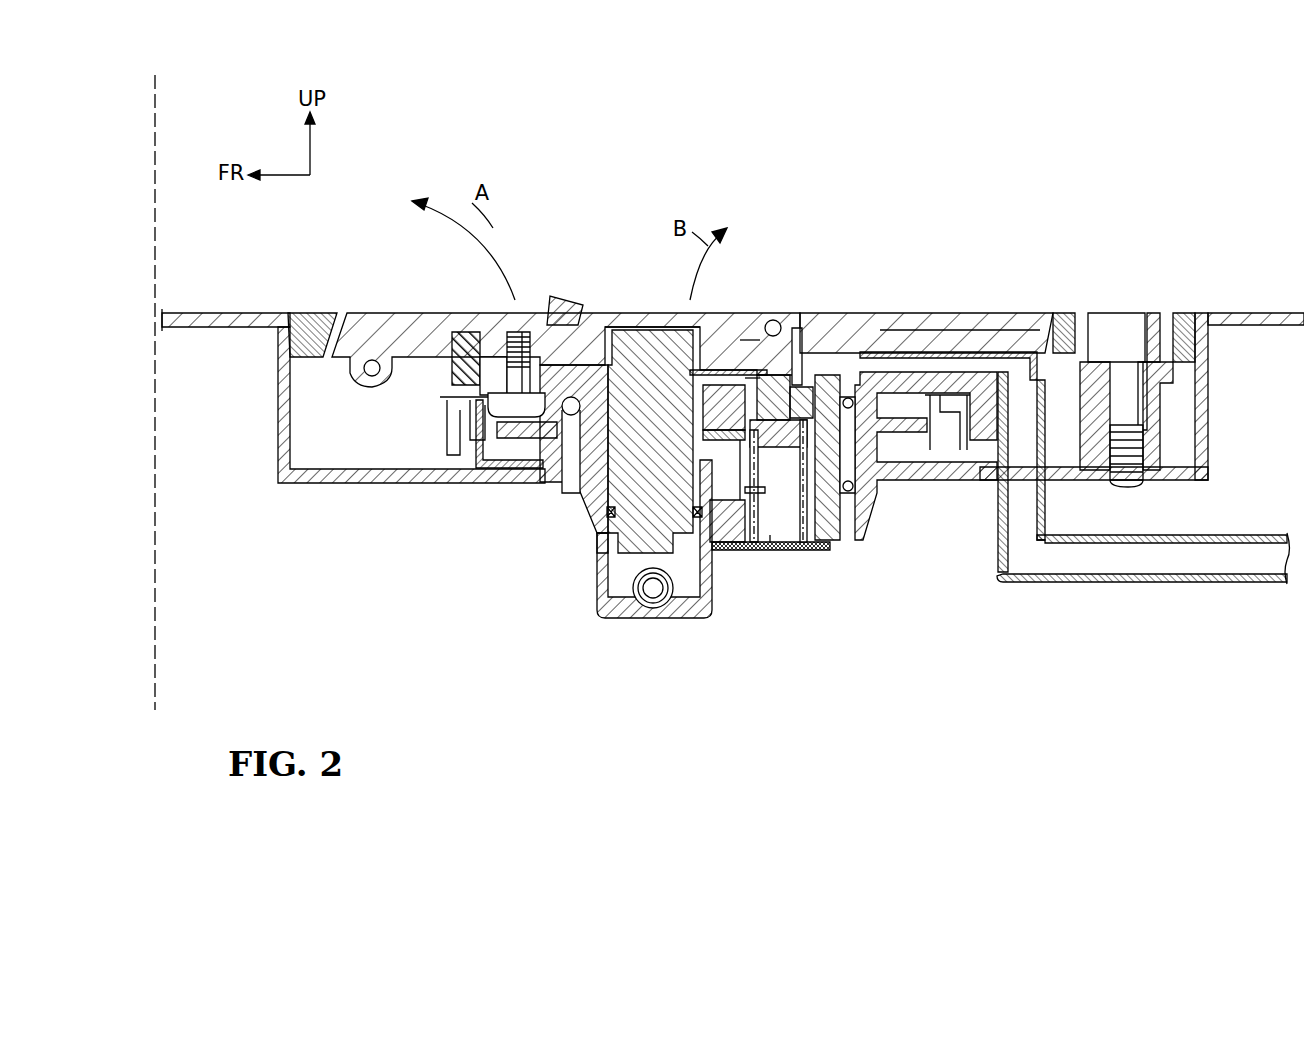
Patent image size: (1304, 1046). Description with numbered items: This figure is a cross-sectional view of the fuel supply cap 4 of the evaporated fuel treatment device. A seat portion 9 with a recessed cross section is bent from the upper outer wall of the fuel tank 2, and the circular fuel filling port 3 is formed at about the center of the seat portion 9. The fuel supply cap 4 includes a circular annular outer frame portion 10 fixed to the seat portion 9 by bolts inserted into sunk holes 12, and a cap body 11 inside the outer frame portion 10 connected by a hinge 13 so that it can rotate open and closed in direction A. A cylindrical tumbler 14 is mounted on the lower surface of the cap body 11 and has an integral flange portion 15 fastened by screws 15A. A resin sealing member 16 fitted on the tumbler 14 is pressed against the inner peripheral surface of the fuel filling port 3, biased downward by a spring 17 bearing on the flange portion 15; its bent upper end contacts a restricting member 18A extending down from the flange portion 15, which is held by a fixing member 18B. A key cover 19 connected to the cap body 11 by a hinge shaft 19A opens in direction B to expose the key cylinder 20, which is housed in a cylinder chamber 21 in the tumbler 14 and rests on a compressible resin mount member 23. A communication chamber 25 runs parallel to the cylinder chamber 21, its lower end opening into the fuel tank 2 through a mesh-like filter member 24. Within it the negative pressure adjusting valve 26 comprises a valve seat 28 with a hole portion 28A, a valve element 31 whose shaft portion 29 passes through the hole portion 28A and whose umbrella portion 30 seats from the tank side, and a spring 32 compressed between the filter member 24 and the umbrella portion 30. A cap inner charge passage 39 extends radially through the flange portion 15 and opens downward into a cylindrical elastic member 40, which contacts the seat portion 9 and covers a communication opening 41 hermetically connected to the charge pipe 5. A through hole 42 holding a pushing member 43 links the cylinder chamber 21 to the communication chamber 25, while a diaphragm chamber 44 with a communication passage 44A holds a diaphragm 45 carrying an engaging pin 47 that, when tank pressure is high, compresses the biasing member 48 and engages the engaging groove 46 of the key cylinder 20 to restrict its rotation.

The fuel tank 2 is at (238, 313).
The fuel filling port 3 is at (533, 496).
The fuel supply cap 4 is at (893, 313).
The charge pipe 5 is at (1165, 584).
The seat portion 9 is at (1055, 480).
The outer frame portion 10 is at (1063, 325).
The cap body 11 is at (907, 330).
The sunk holes 12 is at (1140, 330).
The hinge 13 is at (368, 372).
The tumbler 14 is at (825, 542).
The flange portion 15 is at (548, 330).
The screws 15A is at (573, 377).
The sealing member 16 is at (866, 520).
The spring 17 is at (571, 493).
The restricting member 18A is at (895, 470).
The fixing member 18B is at (953, 450).
The key cover 19 is at (632, 313).
The hinge shaft 19A is at (776, 320).
The key cylinder 20 is at (652, 592).
The cylinder chamber 21 is at (610, 575).
The mount member 23 is at (600, 525).
The filter member 24 is at (777, 551).
The communication chamber 25 is at (803, 551).
The negative pressure adjusting valve 26 is at (797, 374).
The valve seat 28 is at (830, 370).
The hole portion 28A is at (815, 372).
The shaft portion 29 is at (745, 392).
The umbrella portion 30 is at (752, 418).
The valve element 31 is at (652, 403).
The spring 32 is at (757, 551).
The cap inner charge passage 39 is at (950, 352).
The cylindrical elastic member 40 is at (1045, 440).
The communication opening 41 is at (1000, 490).
The through hole 42 is at (712, 327).
The pushing member 43 is at (750, 327).
The diaphragm chamber 44 is at (758, 460).
The communication passage 44A is at (698, 520).
The diaphragm 45 is at (758, 489).
The engaging groove 46 is at (722, 474).
The engaging pin 47 is at (710, 475).
The biasing member 48 is at (740, 507).